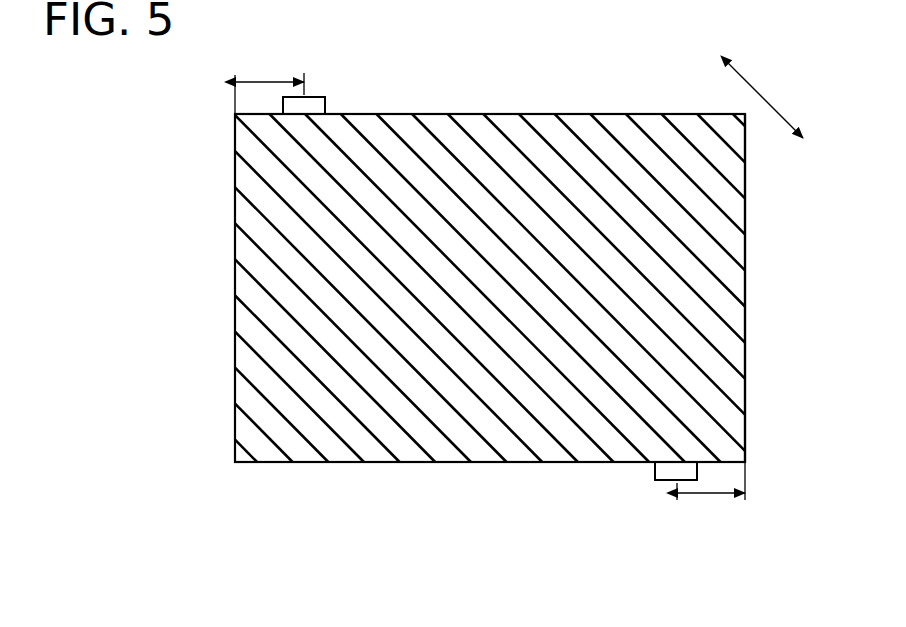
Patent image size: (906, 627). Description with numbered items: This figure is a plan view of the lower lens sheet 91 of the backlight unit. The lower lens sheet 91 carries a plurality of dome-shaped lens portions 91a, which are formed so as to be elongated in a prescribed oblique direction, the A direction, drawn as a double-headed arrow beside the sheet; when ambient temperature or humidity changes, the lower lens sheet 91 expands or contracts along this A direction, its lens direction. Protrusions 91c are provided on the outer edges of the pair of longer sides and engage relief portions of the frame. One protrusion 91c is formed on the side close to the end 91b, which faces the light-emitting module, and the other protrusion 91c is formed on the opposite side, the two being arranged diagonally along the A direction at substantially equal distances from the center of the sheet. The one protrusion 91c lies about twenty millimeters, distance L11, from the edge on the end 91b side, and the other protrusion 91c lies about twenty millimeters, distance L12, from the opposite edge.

The lower lens sheet 91 is at (498, 293).
The lens portions 91a is at (657, 137).
The end 91b is at (731, 281).
The protrusions 91c is at (325, 108).
The distance L11 is at (711, 495).
The distance L12 is at (269, 82).
The A direction A is at (765, 100).